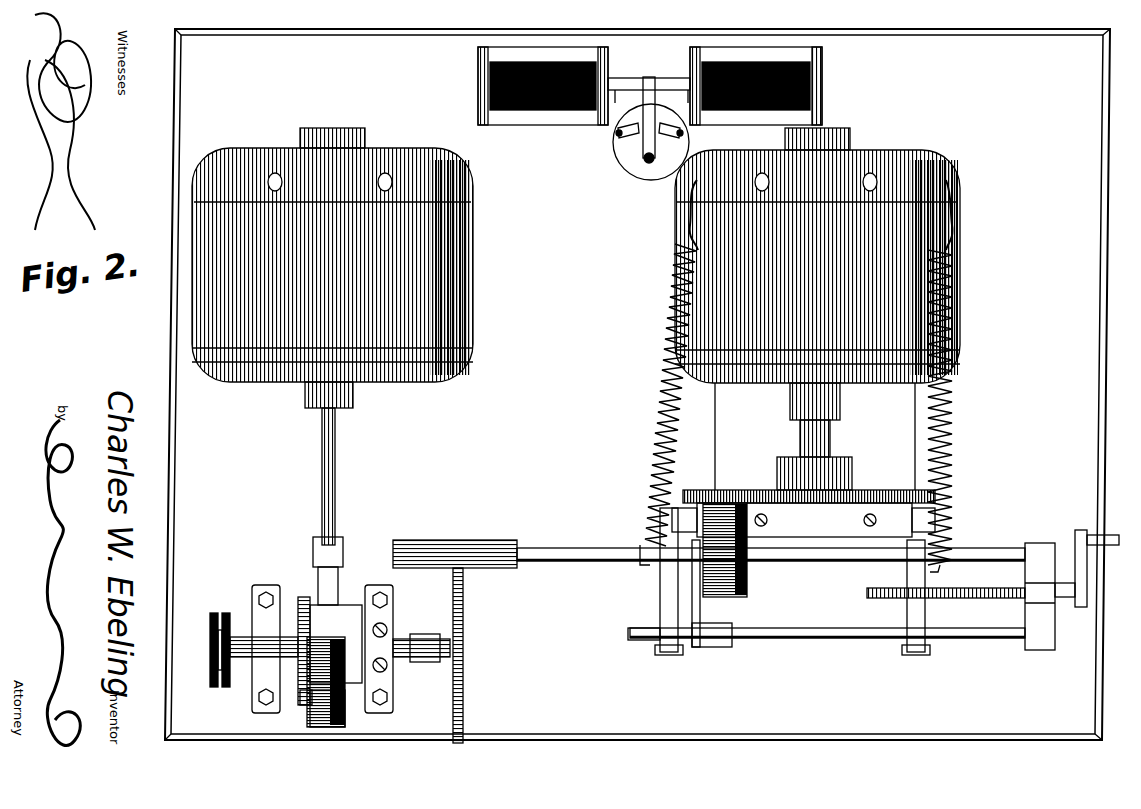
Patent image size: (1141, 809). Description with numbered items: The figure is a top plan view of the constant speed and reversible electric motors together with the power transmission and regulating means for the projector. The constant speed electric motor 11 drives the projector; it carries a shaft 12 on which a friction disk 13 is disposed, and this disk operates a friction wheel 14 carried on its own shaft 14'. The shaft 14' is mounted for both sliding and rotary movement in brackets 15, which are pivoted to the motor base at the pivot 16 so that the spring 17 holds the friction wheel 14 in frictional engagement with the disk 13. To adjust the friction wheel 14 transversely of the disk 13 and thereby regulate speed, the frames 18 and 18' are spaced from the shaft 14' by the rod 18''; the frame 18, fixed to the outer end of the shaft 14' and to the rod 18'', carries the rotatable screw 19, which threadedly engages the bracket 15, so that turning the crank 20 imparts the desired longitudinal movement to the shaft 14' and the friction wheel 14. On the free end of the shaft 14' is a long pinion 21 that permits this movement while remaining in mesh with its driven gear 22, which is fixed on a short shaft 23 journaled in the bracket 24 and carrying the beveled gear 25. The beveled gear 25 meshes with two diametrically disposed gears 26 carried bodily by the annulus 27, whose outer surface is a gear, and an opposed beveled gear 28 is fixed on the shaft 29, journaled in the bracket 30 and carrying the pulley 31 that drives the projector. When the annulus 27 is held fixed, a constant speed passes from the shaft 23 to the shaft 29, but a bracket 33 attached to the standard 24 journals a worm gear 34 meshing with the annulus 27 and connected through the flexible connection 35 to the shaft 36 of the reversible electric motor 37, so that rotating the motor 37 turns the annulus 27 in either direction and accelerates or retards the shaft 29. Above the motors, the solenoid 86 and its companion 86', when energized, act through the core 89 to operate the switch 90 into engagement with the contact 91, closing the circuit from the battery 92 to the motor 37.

The constant speed electric motor 11 is at (940, 160).
The shaft 12 is at (830, 432).
The friction disk 13 is at (858, 490).
The friction wheel 14 is at (730, 528).
The shaft 14' is at (771, 576).
The brackets 15 is at (868, 576).
The pivot 16 is at (968, 495).
The spring 17 is at (975, 420).
The frame 18 is at (1044, 579).
The frame 18' is at (740, 593).
The rod 18'' is at (827, 654).
The screw 19 is at (960, 590).
The crank 20 is at (1085, 580).
The long pinion 21 is at (495, 538).
The driven gear 22 is at (463, 618).
The short shaft 23 is at (420, 662).
The bracket 24 is at (388, 630).
The beveled gear 25 is at (350, 605).
The diametrically disposed gears 26 is at (304, 600).
The annulus 27 is at (312, 700).
The beveled gear 28 is at (305, 700).
The shaft 29 is at (245, 637).
The bracket 30 is at (262, 620).
The pulley 31 is at (210, 640).
The bracket 33 is at (372, 605).
The worm gear 34 is at (318, 657).
The flexible connection 35 is at (338, 540).
The shaft 36 is at (336, 452).
The reversible electric motor 37 is at (474, 310).
The solenoid 86 is at (543, 106).
The electromagnet coil 86' is at (779, 86).
The core 89 is at (643, 78).
The switch 90 is at (643, 150).
The contact 91 is at (615, 130).
The battery 92 is at (672, 136).